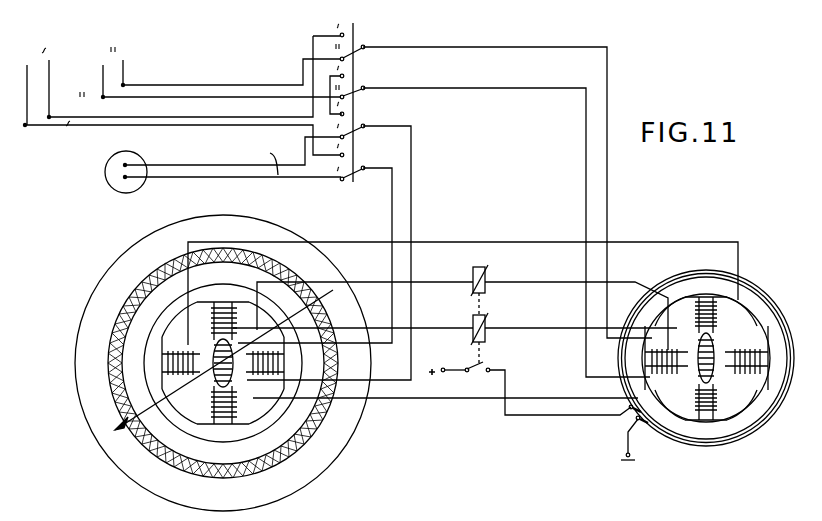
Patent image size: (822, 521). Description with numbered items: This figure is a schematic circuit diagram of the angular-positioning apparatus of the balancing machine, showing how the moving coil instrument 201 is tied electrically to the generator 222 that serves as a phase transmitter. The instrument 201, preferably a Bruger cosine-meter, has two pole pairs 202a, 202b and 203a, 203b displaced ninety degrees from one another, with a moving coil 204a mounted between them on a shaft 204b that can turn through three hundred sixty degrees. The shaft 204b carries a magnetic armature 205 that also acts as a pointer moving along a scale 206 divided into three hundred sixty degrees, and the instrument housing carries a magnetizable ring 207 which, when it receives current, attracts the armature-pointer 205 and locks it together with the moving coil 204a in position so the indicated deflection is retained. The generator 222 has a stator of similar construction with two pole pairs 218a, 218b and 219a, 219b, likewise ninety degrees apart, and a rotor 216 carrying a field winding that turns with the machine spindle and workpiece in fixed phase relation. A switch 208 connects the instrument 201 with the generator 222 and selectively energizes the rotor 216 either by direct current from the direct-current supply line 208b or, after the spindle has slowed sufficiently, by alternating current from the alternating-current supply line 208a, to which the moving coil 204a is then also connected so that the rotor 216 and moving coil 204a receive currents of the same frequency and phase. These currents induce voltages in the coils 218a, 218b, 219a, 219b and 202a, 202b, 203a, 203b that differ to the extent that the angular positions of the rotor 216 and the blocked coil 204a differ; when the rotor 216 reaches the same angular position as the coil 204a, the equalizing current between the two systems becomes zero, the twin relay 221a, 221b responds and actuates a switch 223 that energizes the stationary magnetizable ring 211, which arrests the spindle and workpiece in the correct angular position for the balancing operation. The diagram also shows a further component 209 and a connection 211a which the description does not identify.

The moving coil instrument 201 is at (218, 357).
The pole of first pole pair 202a is at (172, 362).
The pole of first pole pair 202b is at (322, 410).
The pole of second pole pair 203a is at (208, 328).
The pole of second pole pair 203b is at (213, 398).
The moving coil 204a is at (213, 350).
The shaft 204b is at (247, 374).
The magnetic armature 205 is at (222, 375).
The scale 206 is at (142, 473).
The magnetizable ring 207 is at (190, 474).
The switch 208 is at (355, 27).
The alternating-current supply line 208a is at (162, 126).
The direct-current supply line 208b is at (203, 85).
The auxiliary power source 209 is at (134, 185).
The stationary magnetizable ring 211 is at (676, 276).
The brush / ground connection 211a is at (630, 412).
The rotor 216 is at (715, 345).
The pole of generator first pole pair 218a is at (652, 360).
The pole of generator first pole pair 218b is at (765, 360).
The pole of generator second pole pair 219a is at (710, 302).
The pole of generator second pole pair 219b is at (708, 412).
The twin relay 221a is at (484, 274).
The twin relay 221b is at (484, 322).
The generator 222 is at (703, 283).
The switch 223 is at (530, 388).